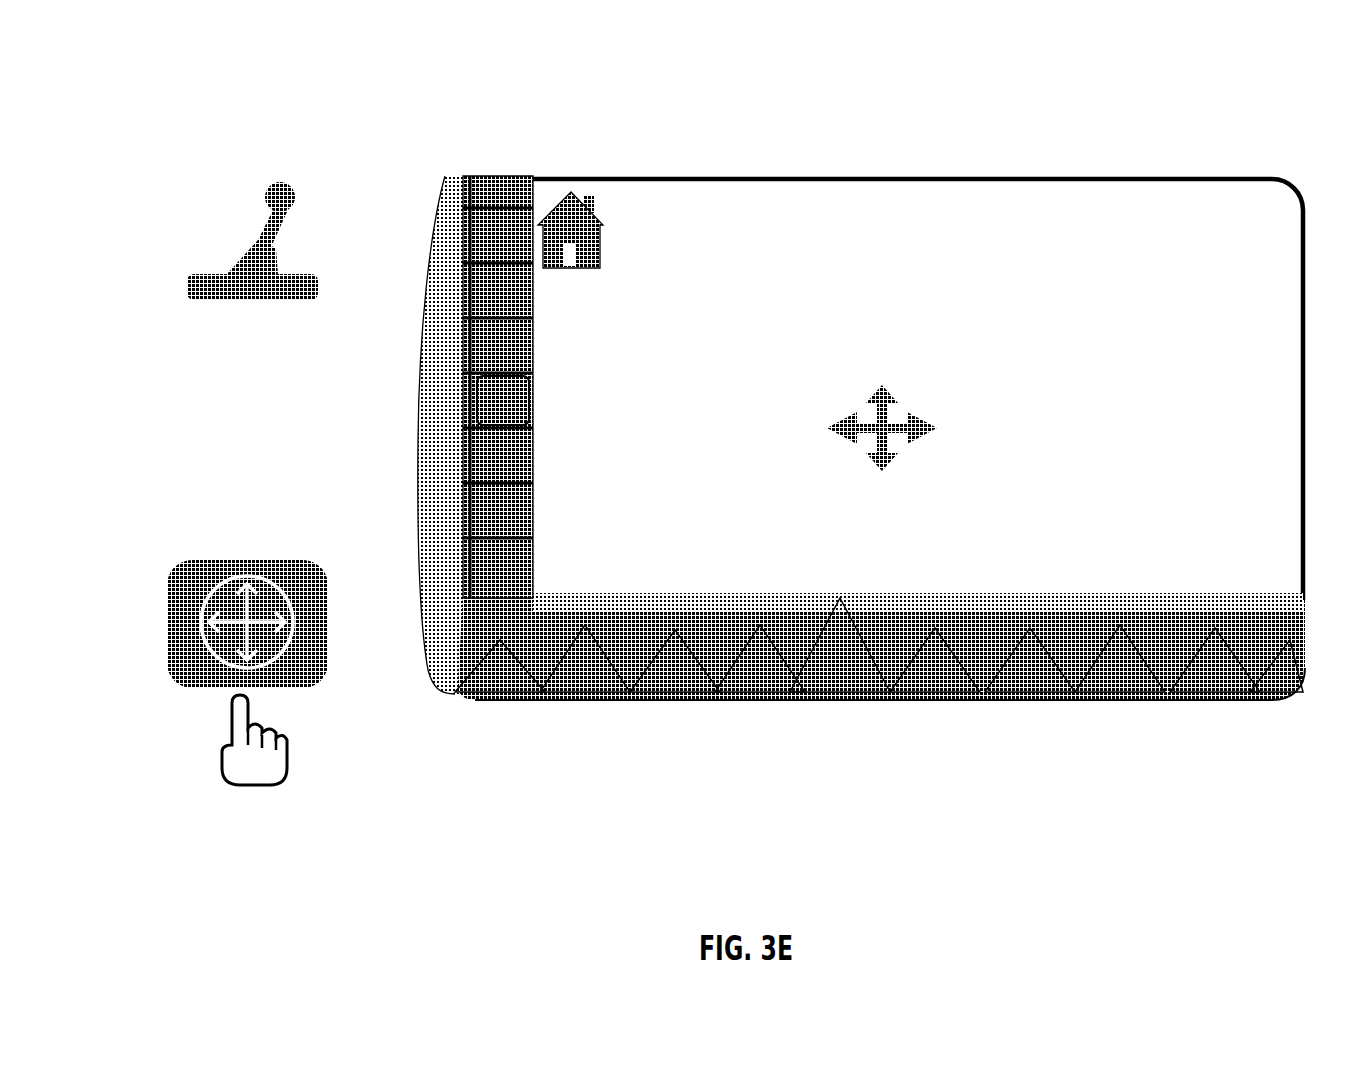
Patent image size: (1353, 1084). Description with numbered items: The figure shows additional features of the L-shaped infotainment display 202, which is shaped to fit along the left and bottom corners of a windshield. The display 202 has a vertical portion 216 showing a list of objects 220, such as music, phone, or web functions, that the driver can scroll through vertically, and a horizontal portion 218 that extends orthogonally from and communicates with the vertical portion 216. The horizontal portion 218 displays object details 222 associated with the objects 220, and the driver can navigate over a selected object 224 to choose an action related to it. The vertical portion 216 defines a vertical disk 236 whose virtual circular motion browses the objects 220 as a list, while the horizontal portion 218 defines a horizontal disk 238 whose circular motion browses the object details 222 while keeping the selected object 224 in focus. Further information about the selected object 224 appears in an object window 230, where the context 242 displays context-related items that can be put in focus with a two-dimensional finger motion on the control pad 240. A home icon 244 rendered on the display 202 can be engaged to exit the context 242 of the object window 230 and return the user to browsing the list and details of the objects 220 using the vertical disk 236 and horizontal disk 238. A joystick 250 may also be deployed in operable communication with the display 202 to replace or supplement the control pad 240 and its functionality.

The L-shaped infotainment display 202 is at (160, 82).
The vertical portion 216 is at (532, 351).
The horizontal portion 218 is at (880, 658).
The objects 220 is at (495, 422).
The object details 222 is at (663, 678).
The selected object 224 is at (493, 678).
The object window 230 is at (850, 205).
The vertical disk 236 is at (428, 275).
The horizontal disk 238 is at (1122, 700).
The control pad 240 is at (310, 682).
The context 242 is at (1012, 362).
The home icon 244 is at (599, 238).
The joystick 250 is at (190, 278).